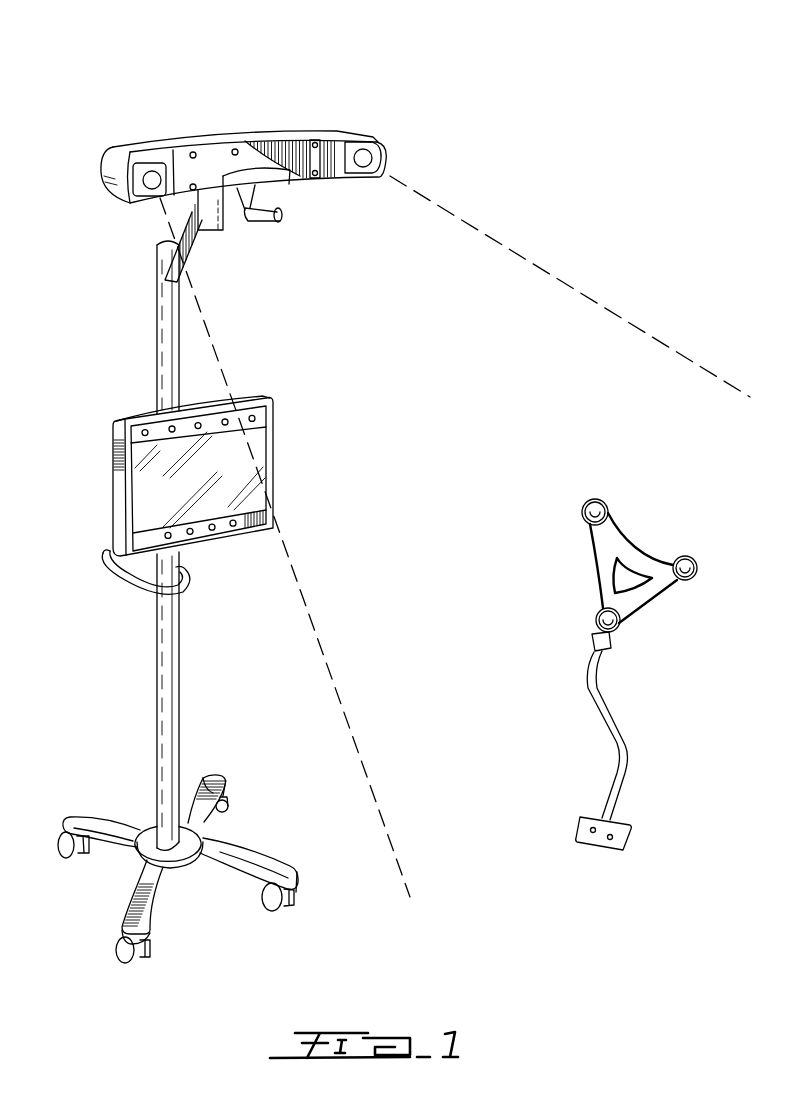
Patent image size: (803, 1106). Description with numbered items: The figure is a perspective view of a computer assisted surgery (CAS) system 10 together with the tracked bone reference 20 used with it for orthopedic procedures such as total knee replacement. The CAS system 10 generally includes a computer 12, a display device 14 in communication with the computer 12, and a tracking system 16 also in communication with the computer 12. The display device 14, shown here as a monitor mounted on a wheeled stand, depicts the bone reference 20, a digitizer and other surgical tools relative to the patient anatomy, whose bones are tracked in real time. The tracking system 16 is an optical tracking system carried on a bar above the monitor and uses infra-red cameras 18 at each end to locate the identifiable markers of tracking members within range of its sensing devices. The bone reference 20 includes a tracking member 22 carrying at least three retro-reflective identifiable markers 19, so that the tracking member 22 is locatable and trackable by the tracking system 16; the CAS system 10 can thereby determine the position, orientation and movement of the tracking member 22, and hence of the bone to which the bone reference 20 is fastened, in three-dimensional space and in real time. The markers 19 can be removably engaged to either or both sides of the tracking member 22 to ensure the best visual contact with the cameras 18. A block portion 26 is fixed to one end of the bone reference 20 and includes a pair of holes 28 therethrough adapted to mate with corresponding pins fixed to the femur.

The computer assisted surgery (CAS) system 10 is at (303, 322).
The computer 12 is at (129, 496).
The display device 14 is at (259, 438).
The tracking system 16 is at (283, 124).
The infra-red cameras 18 is at (155, 190).
The retro-reflective identifiable markers 19 is at (599, 614).
The bone reference 20 is at (695, 503).
The tracking member 22 is at (638, 558).
The block portion 26 is at (601, 851).
The holes 28 is at (590, 831).